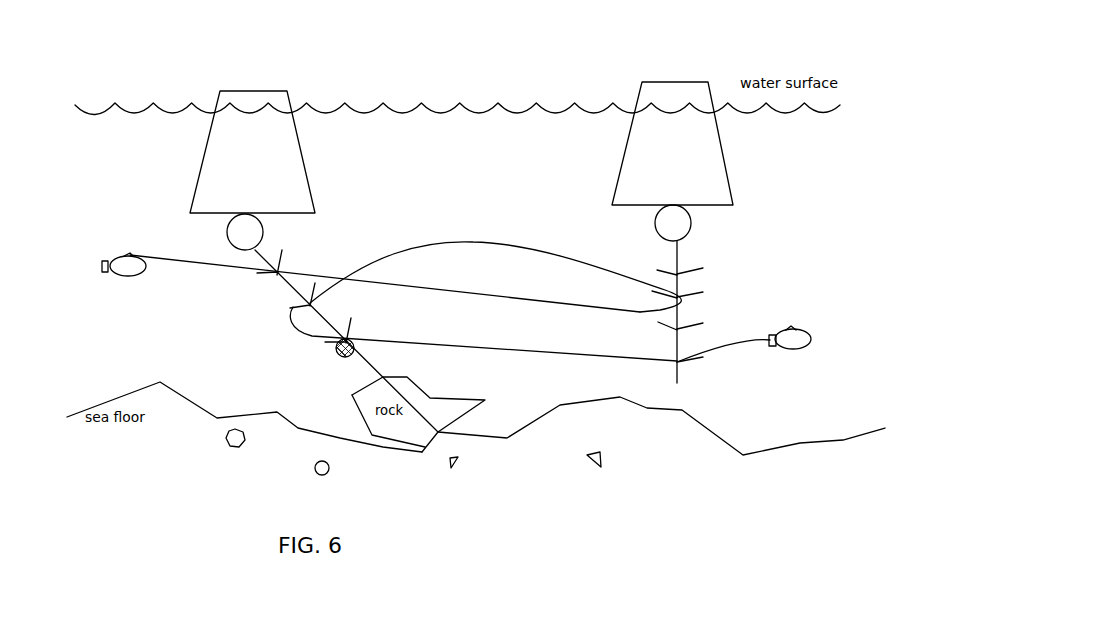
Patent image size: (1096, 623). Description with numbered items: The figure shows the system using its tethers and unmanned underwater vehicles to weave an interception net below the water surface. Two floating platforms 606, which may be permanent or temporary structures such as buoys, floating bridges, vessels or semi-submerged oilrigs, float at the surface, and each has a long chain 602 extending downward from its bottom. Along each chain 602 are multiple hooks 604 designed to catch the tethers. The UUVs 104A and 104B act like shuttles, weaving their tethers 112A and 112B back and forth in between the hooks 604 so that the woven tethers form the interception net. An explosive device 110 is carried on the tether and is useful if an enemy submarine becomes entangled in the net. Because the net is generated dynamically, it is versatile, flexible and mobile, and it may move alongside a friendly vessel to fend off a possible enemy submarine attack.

The floating platform 606 is at (652, 60).
The chain 602 is at (687, 252).
The hook 604 is at (703, 278).
The tether 112A is at (205, 266).
The tether 112B is at (487, 346).
The UUV 104A is at (118, 275).
The UUV 104B is at (810, 346).
The explosive device 110 is at (350, 364).